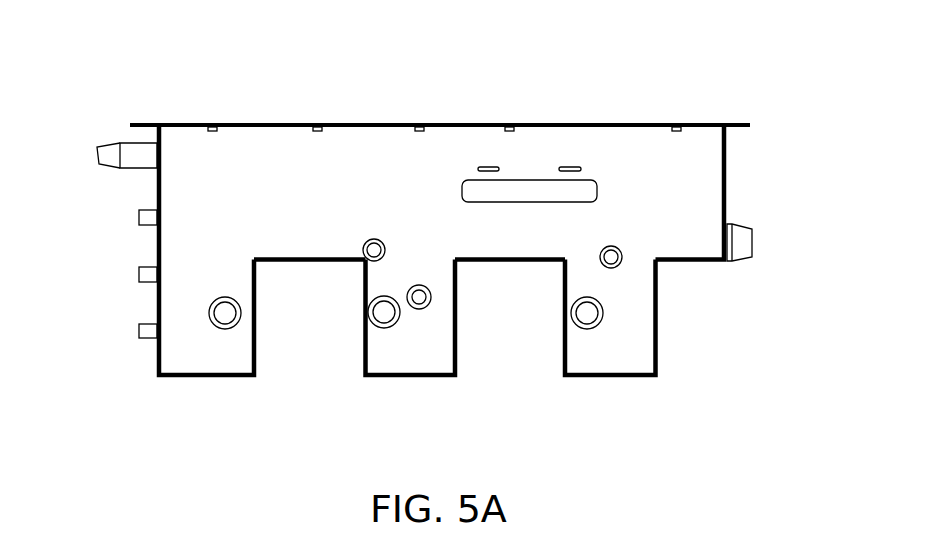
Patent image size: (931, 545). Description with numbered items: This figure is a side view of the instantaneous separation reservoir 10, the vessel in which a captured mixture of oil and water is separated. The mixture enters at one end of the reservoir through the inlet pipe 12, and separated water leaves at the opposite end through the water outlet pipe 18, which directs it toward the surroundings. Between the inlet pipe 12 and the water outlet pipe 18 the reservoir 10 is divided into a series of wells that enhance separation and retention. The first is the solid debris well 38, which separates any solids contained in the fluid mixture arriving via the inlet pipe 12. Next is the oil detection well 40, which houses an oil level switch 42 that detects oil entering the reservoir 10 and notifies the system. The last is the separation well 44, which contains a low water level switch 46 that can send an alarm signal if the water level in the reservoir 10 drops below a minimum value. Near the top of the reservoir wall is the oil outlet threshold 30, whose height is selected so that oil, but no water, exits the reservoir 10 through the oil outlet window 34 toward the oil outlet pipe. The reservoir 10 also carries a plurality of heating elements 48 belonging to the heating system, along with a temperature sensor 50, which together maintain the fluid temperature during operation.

The separation reservoir 10 is at (440, 224).
The inlet pipe 12 is at (107, 142).
The water outlet pipe 18 is at (743, 223).
The oil outlet threshold 30 is at (530, 200).
The oil outlet window 34 is at (513, 190).
The solid debris well 38 is at (197, 358).
The oil detection well 40 is at (383, 365).
The oil level switch 42 is at (421, 309).
The separation well 44 is at (595, 360).
The low water level switch 46 is at (619, 266).
The heating elements 48 is at (242, 312).
The temperature sensor 50 is at (374, 238).